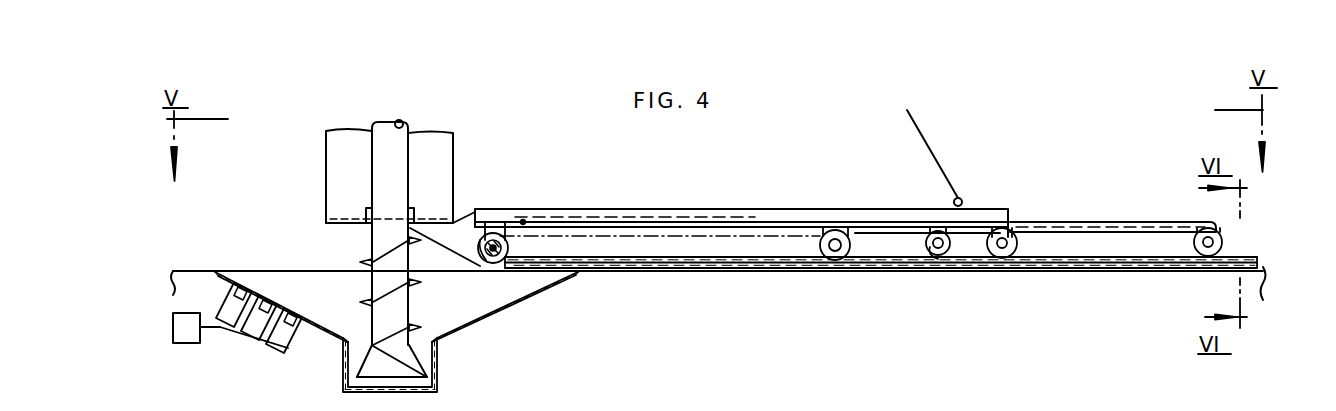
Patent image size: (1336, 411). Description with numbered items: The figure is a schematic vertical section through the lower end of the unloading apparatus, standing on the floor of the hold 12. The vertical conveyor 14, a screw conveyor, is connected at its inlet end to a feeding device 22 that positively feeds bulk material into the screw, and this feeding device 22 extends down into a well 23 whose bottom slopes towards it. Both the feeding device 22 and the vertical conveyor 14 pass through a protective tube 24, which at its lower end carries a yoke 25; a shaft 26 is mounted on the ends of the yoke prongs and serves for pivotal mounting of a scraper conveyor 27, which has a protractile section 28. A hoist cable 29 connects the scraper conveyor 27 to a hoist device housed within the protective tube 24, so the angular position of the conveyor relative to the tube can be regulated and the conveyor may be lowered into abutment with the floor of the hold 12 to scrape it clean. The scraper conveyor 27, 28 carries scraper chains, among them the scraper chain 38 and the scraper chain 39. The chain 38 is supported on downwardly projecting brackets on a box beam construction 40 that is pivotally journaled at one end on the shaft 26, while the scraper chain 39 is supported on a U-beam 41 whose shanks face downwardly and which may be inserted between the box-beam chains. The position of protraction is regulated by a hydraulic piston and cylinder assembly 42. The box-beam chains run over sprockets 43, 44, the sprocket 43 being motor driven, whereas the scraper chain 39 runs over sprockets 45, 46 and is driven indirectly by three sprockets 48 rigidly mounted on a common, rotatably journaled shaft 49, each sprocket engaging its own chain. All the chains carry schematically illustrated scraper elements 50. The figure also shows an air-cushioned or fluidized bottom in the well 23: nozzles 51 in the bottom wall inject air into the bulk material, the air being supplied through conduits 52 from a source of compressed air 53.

The hold 12 is at (196, 271).
The vertical conveyor 14 is at (405, 160).
The feeding device 22 is at (372, 316).
The well 23 is at (477, 327).
The protective tube 24 is at (455, 175).
The yoke 25 is at (465, 215).
The shaft 26 is at (498, 263).
The scraper conveyor 27 is at (740, 271).
The protractile section 28 is at (1115, 260).
The hoist cable 29 is at (940, 173).
The scraper chain 38 is at (680, 269).
The scraper chain 39 is at (1080, 260).
The box beam construction 40 is at (790, 210).
The U-beam 41 is at (1100, 222).
The hydraulic piston and cylinder assembly 42 is at (716, 210).
The sprocket 43 is at (480, 260).
The sprocket 44 is at (1005, 270).
The sprocket 45 is at (835, 262).
The sprocket 46 is at (1223, 240).
The sprockets 48 is at (938, 257).
The shaft 49 is at (930, 252).
The scraper elements 50 is at (625, 268).
The nozzles 51 is at (243, 294).
The conduits 52 is at (247, 342).
The source of compressed air 53 is at (195, 344).